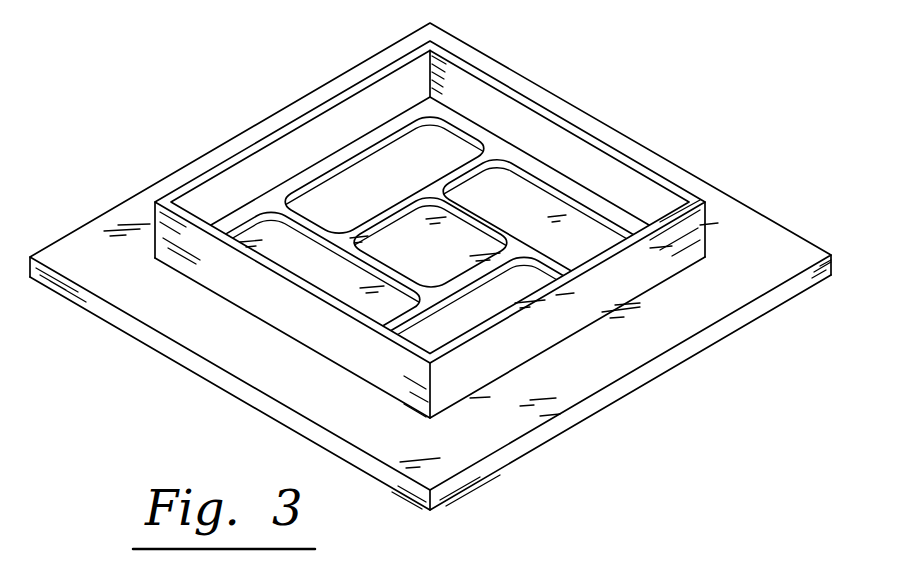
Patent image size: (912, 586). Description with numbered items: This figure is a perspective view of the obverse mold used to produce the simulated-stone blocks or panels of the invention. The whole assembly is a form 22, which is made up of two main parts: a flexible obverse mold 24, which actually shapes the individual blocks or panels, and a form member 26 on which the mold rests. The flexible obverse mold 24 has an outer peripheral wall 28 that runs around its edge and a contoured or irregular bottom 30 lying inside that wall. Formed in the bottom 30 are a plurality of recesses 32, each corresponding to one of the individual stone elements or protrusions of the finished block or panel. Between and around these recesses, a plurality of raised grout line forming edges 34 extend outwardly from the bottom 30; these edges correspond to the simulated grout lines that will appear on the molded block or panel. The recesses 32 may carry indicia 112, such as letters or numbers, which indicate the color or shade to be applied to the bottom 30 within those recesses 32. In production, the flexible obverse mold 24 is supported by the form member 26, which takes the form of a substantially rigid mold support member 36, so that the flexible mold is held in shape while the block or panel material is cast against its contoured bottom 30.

The form 22 is at (434, 209).
The flexible obverse mold 24 is at (477, 46).
The form member 26 is at (430, 266).
The outer peripheral wall 28 is at (641, 169).
The contoured or irregular bottom 30 is at (448, 150).
The recess 32 is at (267, 230).
The raised grout line forming edge 34 is at (313, 177).
The substantially rigid mold support member 36 is at (626, 387).
The indicia 112 is at (286, 230).